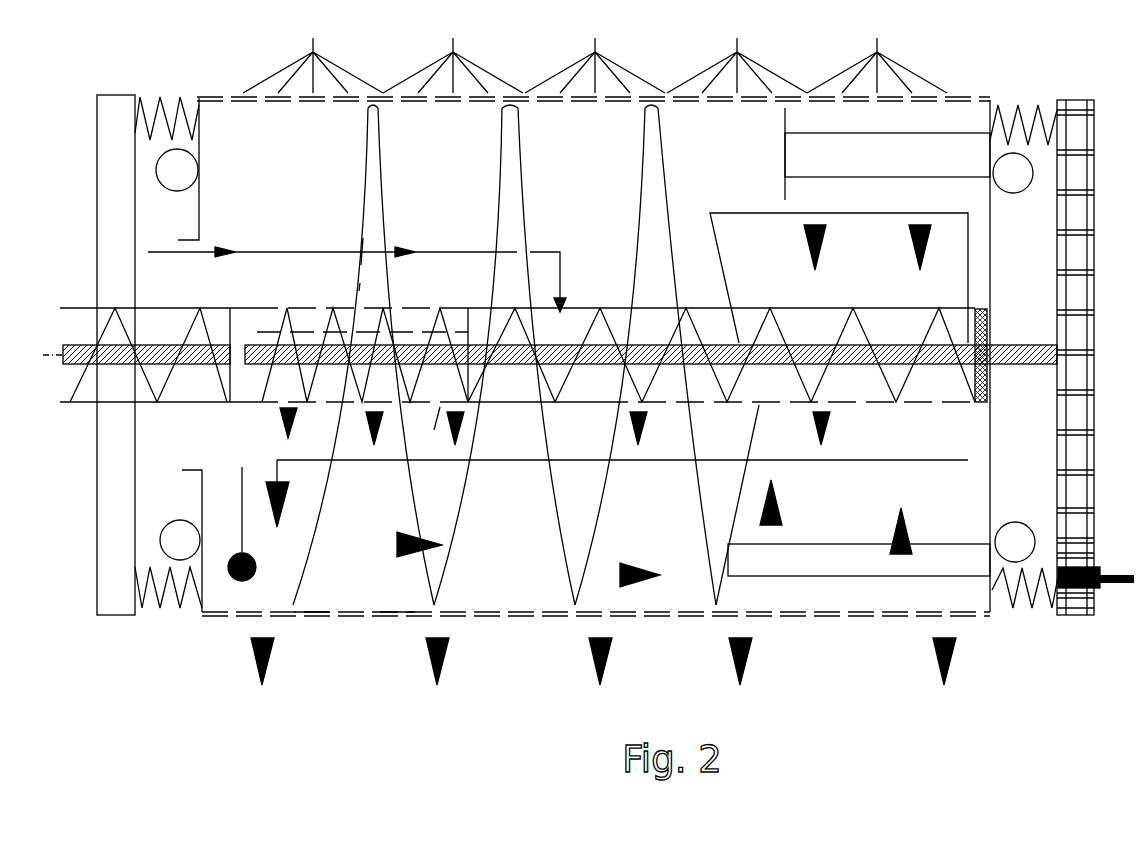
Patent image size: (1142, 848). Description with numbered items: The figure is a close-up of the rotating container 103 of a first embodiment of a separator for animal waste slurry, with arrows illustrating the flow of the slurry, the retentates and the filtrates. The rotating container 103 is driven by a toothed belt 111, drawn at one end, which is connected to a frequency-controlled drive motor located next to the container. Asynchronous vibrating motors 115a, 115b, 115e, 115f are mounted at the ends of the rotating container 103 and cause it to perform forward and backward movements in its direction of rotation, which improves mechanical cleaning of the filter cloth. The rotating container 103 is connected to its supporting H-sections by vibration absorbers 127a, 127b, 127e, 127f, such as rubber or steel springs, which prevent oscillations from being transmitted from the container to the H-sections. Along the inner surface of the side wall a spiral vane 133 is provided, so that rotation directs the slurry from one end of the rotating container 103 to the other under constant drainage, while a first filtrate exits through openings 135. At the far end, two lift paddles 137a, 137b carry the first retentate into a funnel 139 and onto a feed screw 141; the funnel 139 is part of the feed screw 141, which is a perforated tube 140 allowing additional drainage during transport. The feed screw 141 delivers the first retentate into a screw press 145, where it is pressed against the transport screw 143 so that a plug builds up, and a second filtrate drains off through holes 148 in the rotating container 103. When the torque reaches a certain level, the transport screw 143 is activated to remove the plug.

The rotating container 103 is at (989, 64).
The toothed belt 111 is at (1094, 100).
The asynchronous vibrating motor 115a is at (1013, 160).
The asynchronous vibrating motor 115b is at (1015, 563).
The asynchronous vibrating motor 115e is at (178, 149).
The asynchronous vibrating motor 115f is at (182, 560).
The vibration absorber 127a is at (1007, 105).
The vibration absorber 127b is at (1050, 605).
The vibration absorber 127e is at (142, 100).
The vibration absorber 127f is at (148, 617).
The spiral vane 133 is at (663, 133).
The openings 135 is at (307, 620).
The lift paddle 137a is at (848, 150).
The lift paddle 137b is at (841, 568).
The funnel 139 is at (883, 230).
The perforated tube 140 is at (783, 405).
The feed screw 141 is at (612, 285).
The transport screw 143 is at (176, 305).
The screw press 145 is at (368, 108).
The holes 148 is at (440, 407).